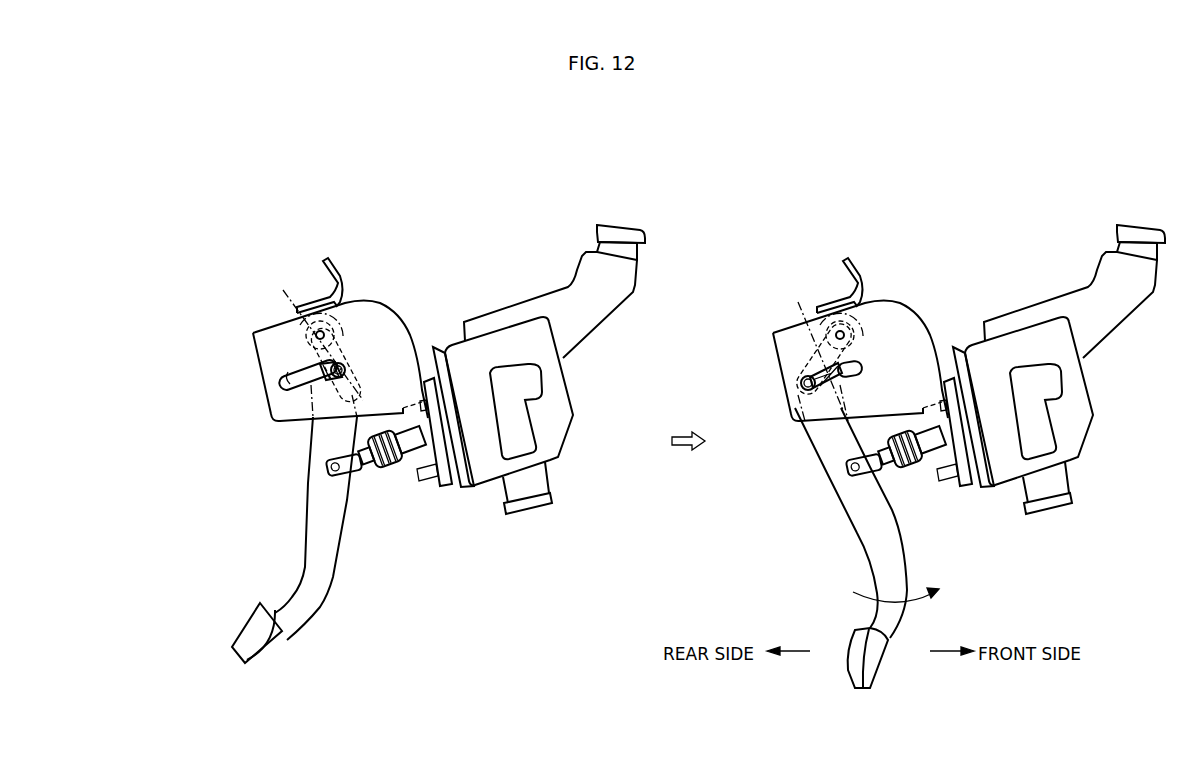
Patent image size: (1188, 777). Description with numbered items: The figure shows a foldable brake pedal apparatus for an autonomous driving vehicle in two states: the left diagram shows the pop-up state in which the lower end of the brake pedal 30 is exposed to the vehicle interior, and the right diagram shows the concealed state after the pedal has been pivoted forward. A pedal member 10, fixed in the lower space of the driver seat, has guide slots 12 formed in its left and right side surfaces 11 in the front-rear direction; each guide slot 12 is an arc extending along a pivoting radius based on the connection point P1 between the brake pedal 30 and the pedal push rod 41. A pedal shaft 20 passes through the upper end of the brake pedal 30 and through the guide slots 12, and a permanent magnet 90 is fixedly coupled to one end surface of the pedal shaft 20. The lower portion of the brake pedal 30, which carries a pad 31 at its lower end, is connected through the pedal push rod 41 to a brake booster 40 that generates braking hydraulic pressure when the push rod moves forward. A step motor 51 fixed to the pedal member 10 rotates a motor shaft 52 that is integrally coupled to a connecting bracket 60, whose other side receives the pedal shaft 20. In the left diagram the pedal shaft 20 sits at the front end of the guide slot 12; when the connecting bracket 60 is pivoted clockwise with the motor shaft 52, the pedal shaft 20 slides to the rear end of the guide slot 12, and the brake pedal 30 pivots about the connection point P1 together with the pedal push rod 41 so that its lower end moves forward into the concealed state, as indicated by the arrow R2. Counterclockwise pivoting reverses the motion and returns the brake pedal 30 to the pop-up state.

The pedal member 10 is at (600, 323).
The side surface 11 is at (499, 373).
The guide slot 12 is at (573, 365).
The pedal shaft 20 is at (531, 406).
The brake pedal 30 is at (573, 524).
The pad 31 is at (545, 625).
The brake booster 40 is at (791, 369).
The pedal push rod 41 is at (651, 476).
The step motor 51 is at (555, 294).
The motor shaft 52 is at (581, 279).
The connecting bracket 60 is at (591, 339).
The permanent magnet 90 is at (573, 337).
The connection point P1 is at (570, 473).
The arrow R2 is at (910, 586).